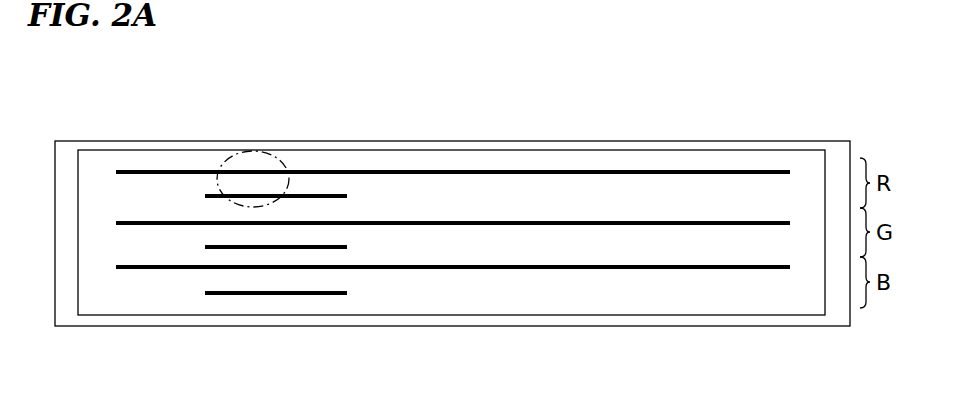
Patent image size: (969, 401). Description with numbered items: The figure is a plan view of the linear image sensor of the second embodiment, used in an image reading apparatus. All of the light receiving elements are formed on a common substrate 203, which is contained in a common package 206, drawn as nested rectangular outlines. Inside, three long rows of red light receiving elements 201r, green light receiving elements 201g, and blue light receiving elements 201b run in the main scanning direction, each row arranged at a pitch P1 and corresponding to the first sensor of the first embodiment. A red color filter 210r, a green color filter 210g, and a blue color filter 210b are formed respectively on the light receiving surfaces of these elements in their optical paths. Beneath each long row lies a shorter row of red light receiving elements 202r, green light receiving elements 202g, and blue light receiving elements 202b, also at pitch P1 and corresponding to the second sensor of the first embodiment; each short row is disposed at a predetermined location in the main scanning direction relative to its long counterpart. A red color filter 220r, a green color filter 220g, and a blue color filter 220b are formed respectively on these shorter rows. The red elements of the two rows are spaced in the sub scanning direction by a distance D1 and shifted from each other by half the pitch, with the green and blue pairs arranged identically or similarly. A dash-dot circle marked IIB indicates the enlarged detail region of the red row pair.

The common package 206 is at (145, 141).
The common substrate 203 is at (777, 149).
The red light receiving elements 201r is at (575, 170).
The green light receiving elements 201g is at (645, 221).
The blue light receiving elements 201b is at (718, 265).
The red light receiving elements 202r is at (300, 194).
The green light receiving elements 202g is at (327, 246).
The blue light receiving elements 202b is at (317, 296).
The red color filter 210r is at (445, 170).
The green color filter 210g is at (615, 225).
The blue color filter 210b is at (473, 269).
The red color filter 220r is at (208, 196).
The green color filter 220g is at (143, 269).
The blue color filter 220b is at (213, 295).
The section IIB indicator IIB is at (220, 161).